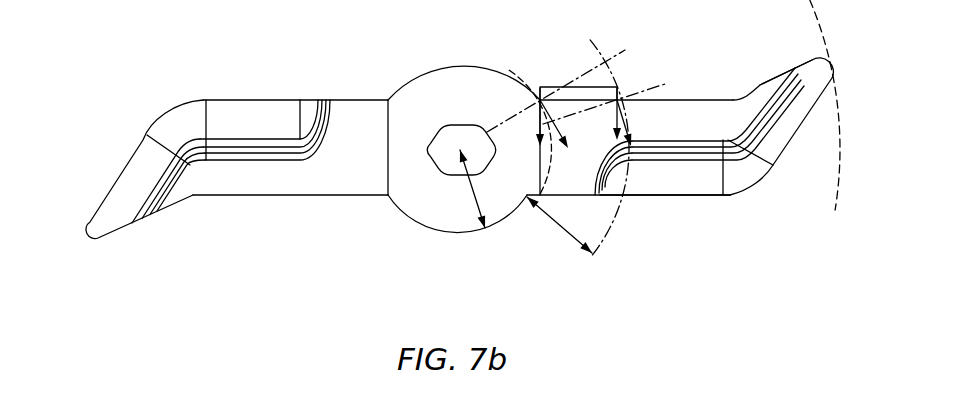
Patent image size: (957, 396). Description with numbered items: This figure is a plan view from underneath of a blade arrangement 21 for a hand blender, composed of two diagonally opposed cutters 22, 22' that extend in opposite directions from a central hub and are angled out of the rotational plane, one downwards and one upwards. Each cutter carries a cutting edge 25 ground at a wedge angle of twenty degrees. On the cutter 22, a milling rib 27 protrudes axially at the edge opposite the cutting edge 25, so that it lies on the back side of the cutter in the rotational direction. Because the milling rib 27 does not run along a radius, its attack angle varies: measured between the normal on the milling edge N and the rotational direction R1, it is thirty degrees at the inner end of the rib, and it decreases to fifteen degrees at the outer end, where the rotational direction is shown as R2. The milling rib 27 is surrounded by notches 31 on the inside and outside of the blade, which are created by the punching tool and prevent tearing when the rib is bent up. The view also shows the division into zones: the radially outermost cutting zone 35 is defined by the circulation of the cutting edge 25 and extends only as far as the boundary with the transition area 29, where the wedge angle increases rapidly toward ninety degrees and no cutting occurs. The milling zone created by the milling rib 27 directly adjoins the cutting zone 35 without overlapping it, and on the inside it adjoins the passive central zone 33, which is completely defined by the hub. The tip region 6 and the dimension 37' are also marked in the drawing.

The hook tip 6 is at (777, 130).
The blade arrangement 21 is at (160, 83).
The cutter 22 is at (732, 124).
The cutter 22' is at (208, 187).
The cutting edge 25 is at (728, 197).
The milling rib 27 is at (538, 87).
The transition area 29 is at (617, 185).
The notches 31 is at (540, 100).
The passive central zone 33 is at (471, 197).
The cutting zone 35 is at (616, 61).
The radius 37' is at (666, 141).
The normal on the milling edge N is at (532, 134).
The rotational direction R1 is at (578, 153).
The rotational direction R2 is at (659, 113).